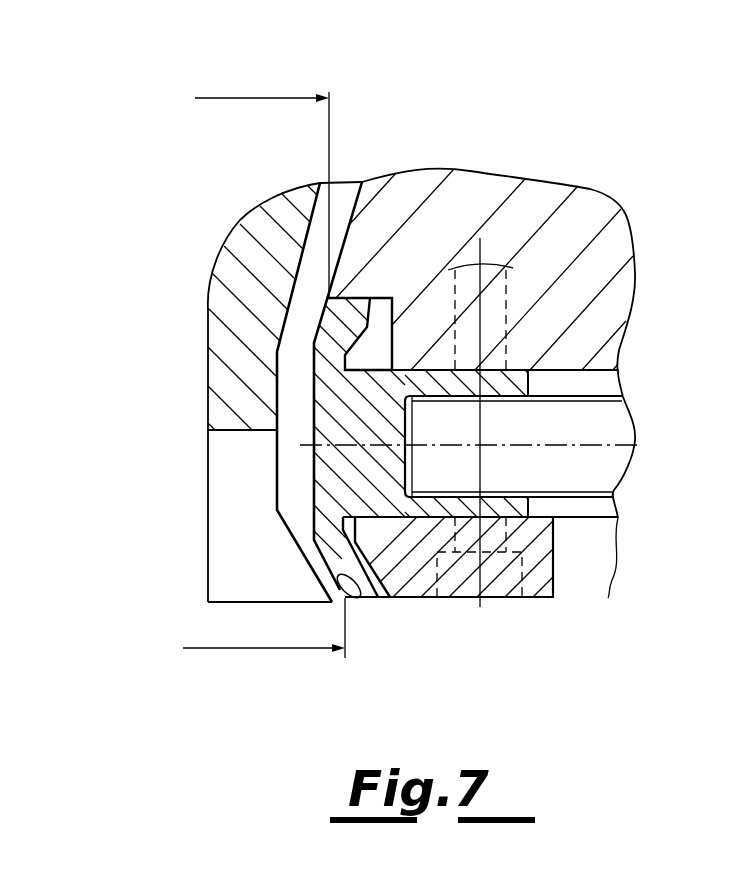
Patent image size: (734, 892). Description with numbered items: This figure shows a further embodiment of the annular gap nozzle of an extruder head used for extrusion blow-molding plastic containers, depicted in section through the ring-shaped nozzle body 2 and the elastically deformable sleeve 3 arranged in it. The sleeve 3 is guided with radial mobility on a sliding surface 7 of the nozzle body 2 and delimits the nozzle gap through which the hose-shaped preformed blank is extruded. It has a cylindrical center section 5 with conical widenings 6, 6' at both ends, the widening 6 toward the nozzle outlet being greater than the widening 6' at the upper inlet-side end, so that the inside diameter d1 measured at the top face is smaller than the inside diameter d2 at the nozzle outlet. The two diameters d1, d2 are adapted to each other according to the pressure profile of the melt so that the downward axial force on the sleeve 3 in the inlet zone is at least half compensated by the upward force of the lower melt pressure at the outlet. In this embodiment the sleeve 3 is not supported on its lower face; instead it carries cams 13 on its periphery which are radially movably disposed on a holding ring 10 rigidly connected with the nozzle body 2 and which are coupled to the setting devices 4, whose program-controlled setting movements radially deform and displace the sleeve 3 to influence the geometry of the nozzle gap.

The nozzle body 2 is at (575, 218).
The sleeve 3 is at (314, 464).
The setting devices 4 is at (617, 422).
The cylindrical center section 5 is at (315, 402).
The conical widening 6 is at (372, 619).
The conical widening 6' is at (432, 240).
The sliding surface 7 is at (212, 562).
The holding ring 10 is at (540, 562).
The cams 13 is at (528, 370).
The inside diameter of the sleeve at the top end d1 is at (232, 98).
The inside diameter of the sleeve at the nozzle outlet d2 is at (243, 652).